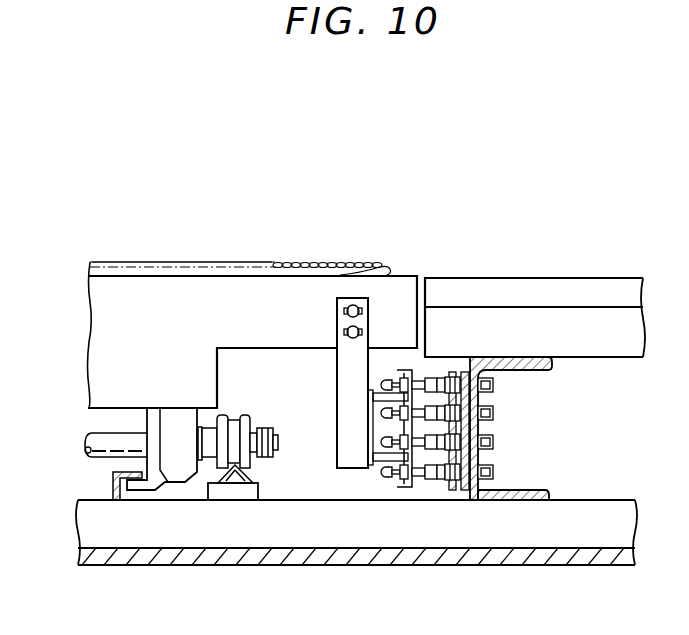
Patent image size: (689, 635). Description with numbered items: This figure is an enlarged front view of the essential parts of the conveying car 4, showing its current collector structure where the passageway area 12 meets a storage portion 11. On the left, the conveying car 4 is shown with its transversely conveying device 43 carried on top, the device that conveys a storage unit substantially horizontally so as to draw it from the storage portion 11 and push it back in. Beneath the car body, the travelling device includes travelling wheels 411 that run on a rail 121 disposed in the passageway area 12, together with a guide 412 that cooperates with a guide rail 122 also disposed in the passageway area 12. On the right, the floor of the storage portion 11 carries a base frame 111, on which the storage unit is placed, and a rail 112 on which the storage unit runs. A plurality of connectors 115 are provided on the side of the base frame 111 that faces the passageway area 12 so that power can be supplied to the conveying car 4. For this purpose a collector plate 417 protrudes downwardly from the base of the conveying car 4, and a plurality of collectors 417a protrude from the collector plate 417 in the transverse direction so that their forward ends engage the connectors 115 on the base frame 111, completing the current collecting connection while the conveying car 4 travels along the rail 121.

The storage portion 11 is at (526, 190).
The passageway area 12 is at (233, 187).
The conveying car 4 is at (137, 252).
The transversely conveying device 43 is at (382, 266).
The rail 112 is at (561, 278).
The connector 115 is at (457, 442).
The base frame 111 is at (503, 487).
The rail 121 is at (251, 475).
The guide rail 122 is at (112, 476).
The travelling wheel 411 is at (242, 416).
The guide 412 is at (148, 492).
The collector plate 417 is at (400, 488).
The collector 417a is at (418, 452).